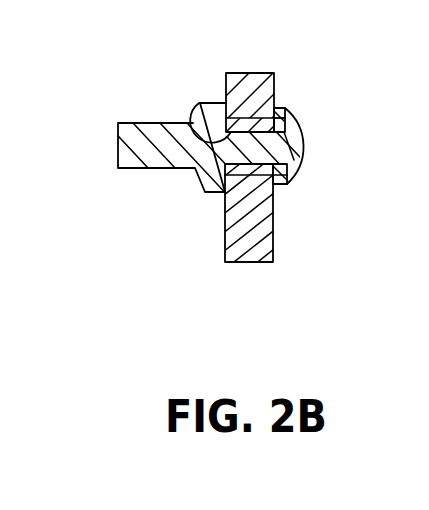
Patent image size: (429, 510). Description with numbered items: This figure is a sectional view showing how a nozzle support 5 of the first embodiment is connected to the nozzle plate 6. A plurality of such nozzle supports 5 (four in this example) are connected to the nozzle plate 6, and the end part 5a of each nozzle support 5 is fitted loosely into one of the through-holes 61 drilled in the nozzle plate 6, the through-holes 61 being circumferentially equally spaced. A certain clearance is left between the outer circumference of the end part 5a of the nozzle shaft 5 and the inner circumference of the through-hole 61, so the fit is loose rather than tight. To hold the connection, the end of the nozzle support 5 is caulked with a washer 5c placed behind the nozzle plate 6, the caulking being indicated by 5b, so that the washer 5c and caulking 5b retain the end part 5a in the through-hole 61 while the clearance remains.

The nozzle support 5 is at (160, 157).
The end part 5a is at (278, 187).
The caulking 5b is at (303, 141).
The washer 5c is at (280, 108).
The nozzle plate 6 is at (250, 88).
The through-hole 61 is at (194, 122).